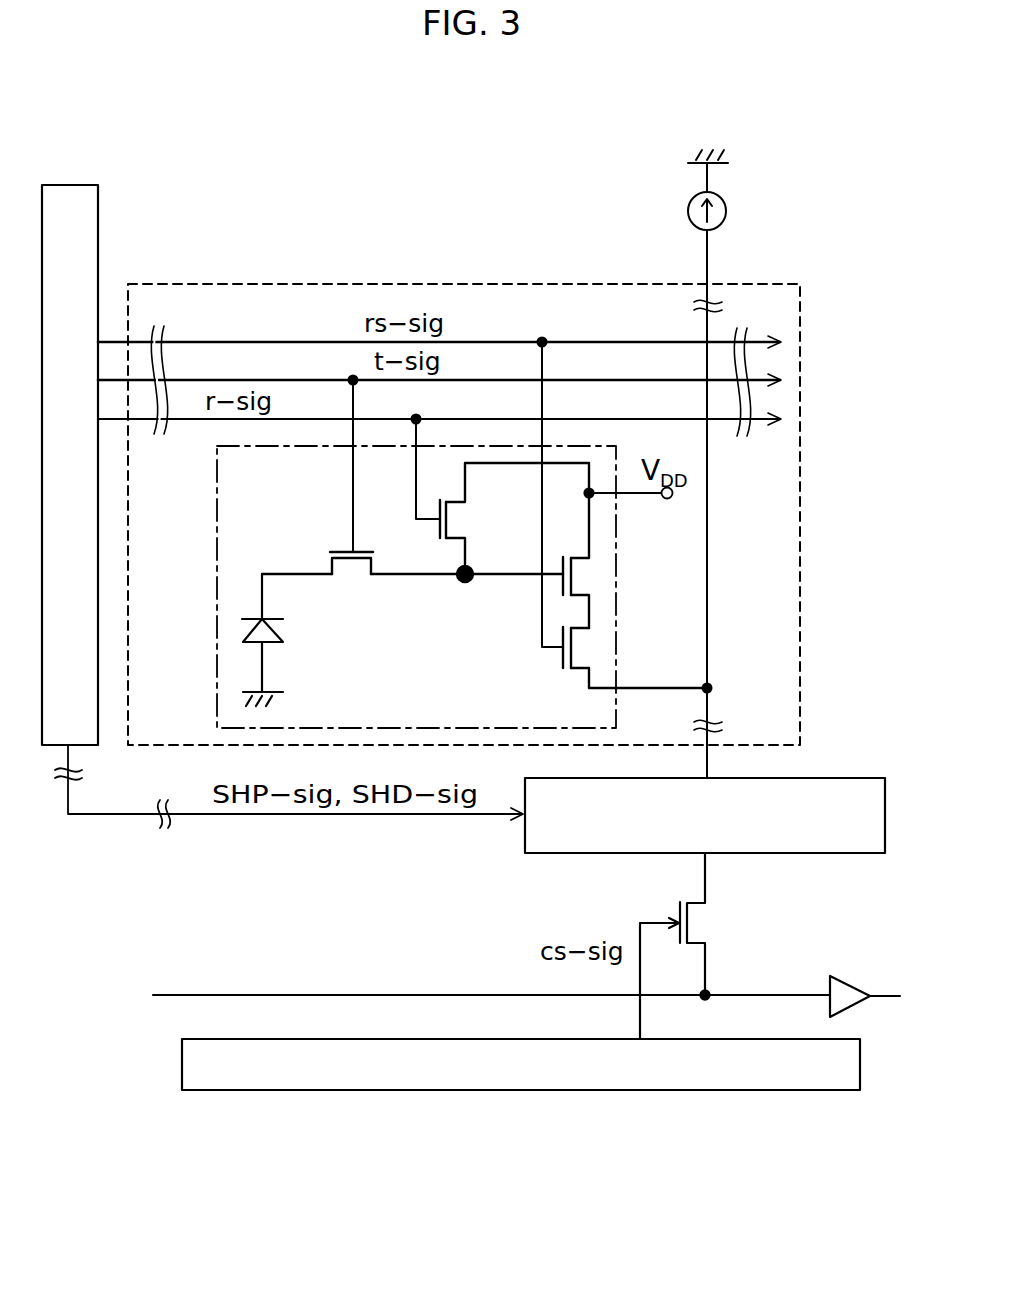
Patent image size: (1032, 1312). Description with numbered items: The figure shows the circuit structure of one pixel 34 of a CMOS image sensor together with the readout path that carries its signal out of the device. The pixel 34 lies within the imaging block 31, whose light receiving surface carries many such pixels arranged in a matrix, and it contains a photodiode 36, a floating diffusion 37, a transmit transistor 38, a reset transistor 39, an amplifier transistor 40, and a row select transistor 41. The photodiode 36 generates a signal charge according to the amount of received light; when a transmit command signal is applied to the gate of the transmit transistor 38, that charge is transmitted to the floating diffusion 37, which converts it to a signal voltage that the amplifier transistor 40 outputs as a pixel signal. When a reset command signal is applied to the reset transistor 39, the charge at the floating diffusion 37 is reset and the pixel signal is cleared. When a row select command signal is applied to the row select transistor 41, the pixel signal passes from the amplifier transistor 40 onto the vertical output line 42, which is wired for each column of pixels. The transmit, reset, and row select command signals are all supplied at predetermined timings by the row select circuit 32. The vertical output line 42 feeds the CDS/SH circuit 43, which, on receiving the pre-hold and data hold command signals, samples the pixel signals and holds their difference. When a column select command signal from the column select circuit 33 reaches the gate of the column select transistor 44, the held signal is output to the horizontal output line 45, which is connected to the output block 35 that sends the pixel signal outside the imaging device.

The imaging block 31 is at (800, 492).
The row select circuit 32 is at (98, 228).
The column select circuit 33 is at (521, 1090).
The pixel 34 is at (216, 553).
The output block 35 is at (853, 985).
The photodiode 36 is at (263, 660).
The floating diffusion 37 is at (463, 584).
The transmit transistor 38 is at (352, 580).
The reset transistor 39 is at (448, 520).
The amplifier transistor 40 is at (591, 575).
The row select transistor 41 is at (591, 647).
The vertical output line 42 is at (709, 530).
The CDS/SH circuit 43 is at (846, 778).
The column select transistor 44 is at (707, 923).
The horizontal output line 45 is at (401, 993).